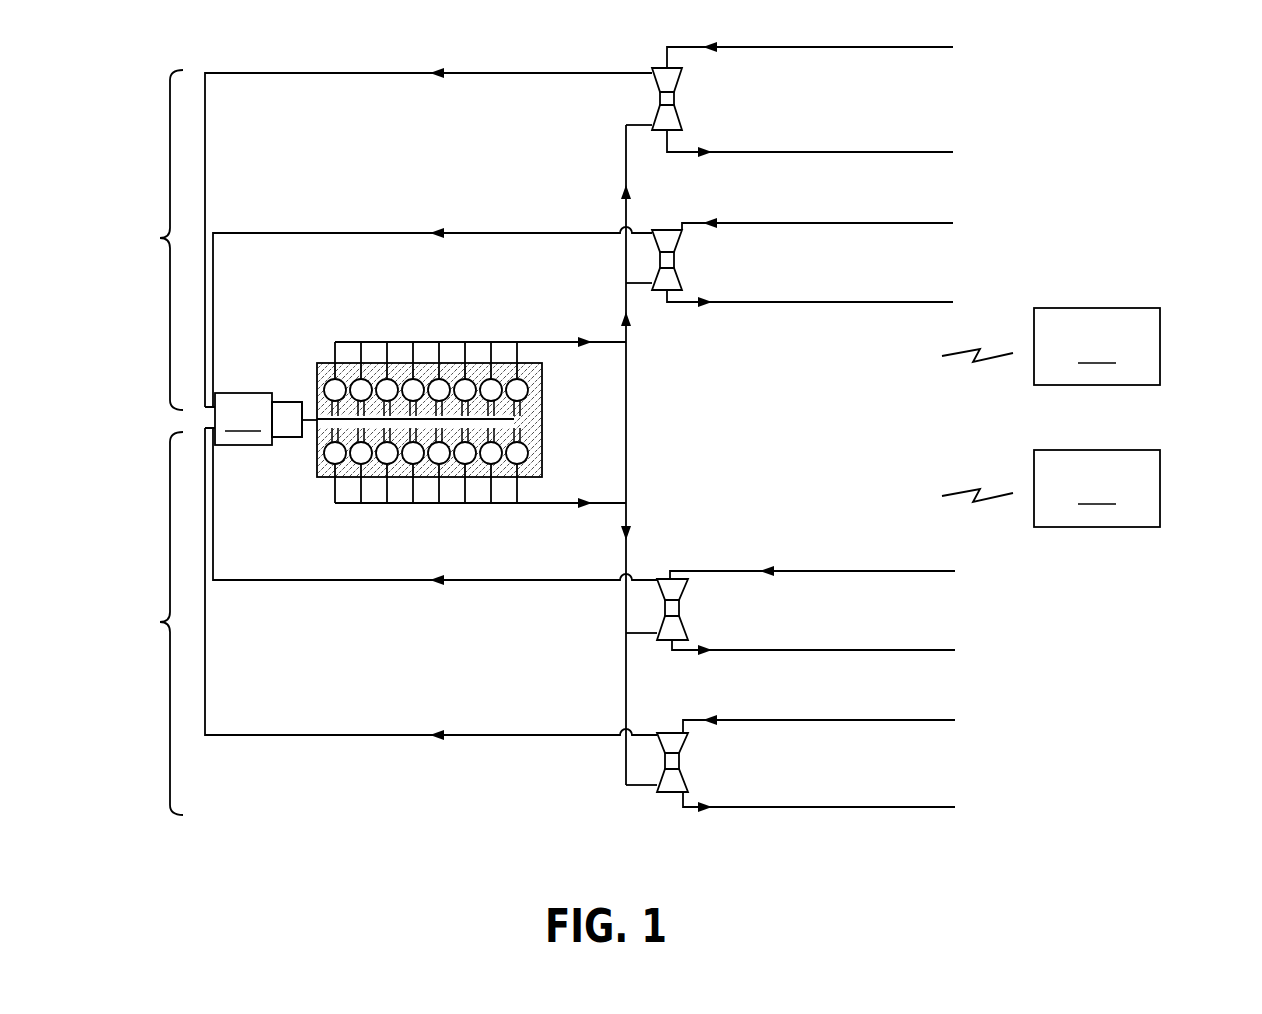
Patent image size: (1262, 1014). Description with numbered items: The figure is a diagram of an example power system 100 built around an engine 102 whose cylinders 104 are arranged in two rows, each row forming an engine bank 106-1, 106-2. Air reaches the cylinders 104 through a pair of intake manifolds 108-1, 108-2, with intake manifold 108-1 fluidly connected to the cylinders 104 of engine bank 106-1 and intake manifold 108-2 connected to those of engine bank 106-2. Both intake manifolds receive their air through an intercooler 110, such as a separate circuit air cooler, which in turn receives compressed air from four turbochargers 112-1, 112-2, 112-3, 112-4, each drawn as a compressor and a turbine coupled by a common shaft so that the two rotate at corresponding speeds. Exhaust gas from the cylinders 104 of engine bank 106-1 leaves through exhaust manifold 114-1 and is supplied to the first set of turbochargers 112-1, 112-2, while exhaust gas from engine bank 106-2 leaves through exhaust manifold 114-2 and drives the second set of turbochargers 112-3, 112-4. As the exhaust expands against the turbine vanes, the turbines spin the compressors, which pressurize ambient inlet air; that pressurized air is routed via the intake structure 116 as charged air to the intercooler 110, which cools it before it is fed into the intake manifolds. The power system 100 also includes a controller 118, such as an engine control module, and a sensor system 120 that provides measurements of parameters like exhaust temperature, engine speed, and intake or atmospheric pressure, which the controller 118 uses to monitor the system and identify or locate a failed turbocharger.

The power system 100 is at (1107, 55).
The engine 102 is at (417, 413).
The cylinders 104 is at (330, 381).
The engine bank 106-1 is at (371, 240).
The engine bank 106-2 is at (374, 621).
The intake manifold 108-1 is at (278, 393).
The intake manifold 108-2 is at (280, 445).
The intercooler 110 is at (243, 419).
The turbocharger 112-1 is at (646, 97).
The turbocharger 112-2 is at (655, 254).
The turbocharger 112-3 is at (652, 763).
The turbocharger 112-4 is at (652, 613).
The exhaust manifold 114-1 is at (503, 342).
The exhaust manifold 114-2 is at (543, 503).
The intake structure 116 is at (400, 68).
The controller 118 is at (1051, 346).
The sensor system 120 is at (1051, 488).